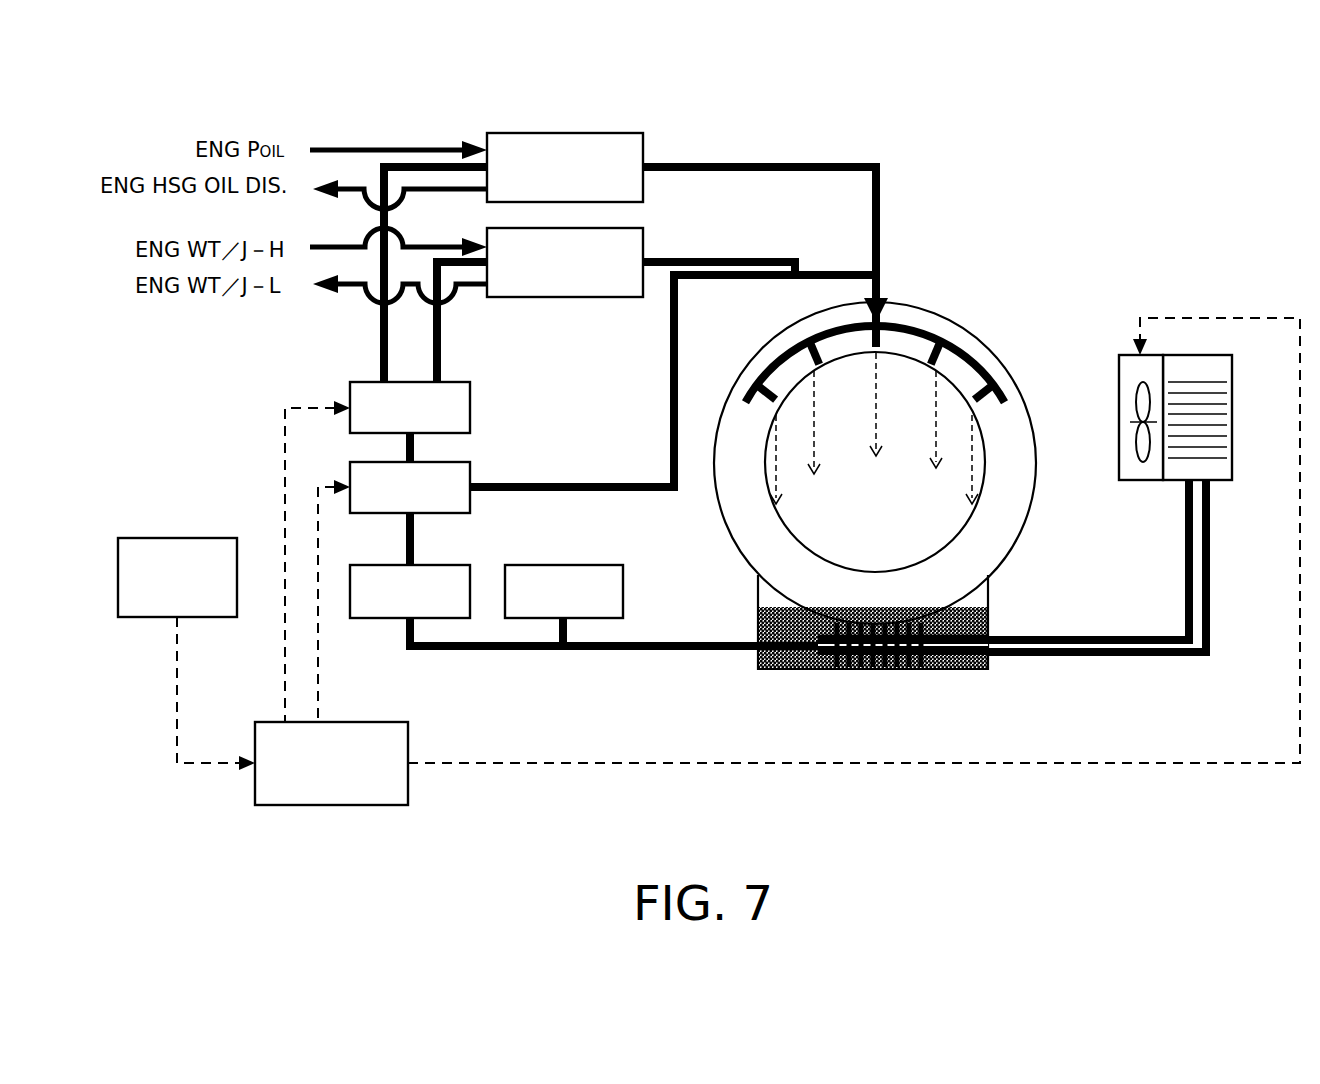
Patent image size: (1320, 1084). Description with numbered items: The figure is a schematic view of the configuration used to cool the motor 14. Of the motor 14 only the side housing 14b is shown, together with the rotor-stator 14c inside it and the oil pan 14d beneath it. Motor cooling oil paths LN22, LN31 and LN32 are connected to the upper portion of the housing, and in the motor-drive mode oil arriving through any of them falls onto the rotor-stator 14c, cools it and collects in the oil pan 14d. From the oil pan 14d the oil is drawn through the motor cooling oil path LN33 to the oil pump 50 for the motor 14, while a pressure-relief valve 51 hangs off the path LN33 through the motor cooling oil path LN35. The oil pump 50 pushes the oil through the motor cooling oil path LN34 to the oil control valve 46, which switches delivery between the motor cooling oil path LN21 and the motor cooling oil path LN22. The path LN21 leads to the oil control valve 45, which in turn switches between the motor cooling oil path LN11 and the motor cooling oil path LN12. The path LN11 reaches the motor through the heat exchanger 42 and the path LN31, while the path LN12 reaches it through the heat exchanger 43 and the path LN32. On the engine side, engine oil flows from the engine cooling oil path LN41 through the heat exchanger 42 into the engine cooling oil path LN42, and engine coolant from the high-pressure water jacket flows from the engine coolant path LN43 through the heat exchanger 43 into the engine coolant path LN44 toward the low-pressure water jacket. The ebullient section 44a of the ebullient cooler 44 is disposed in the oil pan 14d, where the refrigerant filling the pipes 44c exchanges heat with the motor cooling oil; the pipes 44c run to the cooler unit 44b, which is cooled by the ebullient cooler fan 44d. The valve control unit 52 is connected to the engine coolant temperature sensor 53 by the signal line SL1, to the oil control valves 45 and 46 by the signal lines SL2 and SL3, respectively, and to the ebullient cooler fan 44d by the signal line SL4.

The motor 14 is at (899, 465).
The side housing 14b is at (930, 310).
The rotor-stator 14c is at (917, 540).
The oil pan 14d is at (778, 670).
The heat exchanger 42 is at (595, 132).
The heat exchanger 43 is at (592, 298).
The ebullient cooler 44 is at (1057, 503).
The ebullient section 44a is at (912, 676).
The radiator 44b is at (1242, 374).
The pipes 44c is at (1065, 663).
The ebullient cooler fan 44d is at (1104, 404).
The oil control valve 45 is at (470, 400).
The oil control valve 46 is at (470, 468).
The oil pump 50 is at (445, 565).
The pressure-relief valve 51 is at (572, 563).
The valve control unit 52 is at (390, 722).
The engine coolant temperature sensor 53 is at (168, 538).
The motor cooling oil path LN11 is at (380, 327).
The motor cooling oil path LN12 is at (441, 333).
The motor cooling oil path LN21 is at (407, 448).
The motor cooling oil path LN22 is at (553, 485).
The motor cooling oil path LN31 is at (775, 162).
The motor cooling oil path LN32 is at (703, 257).
The motor cooling oil path LN33 is at (617, 652).
The motor cooling oil path LN34 is at (407, 532).
The motor cooling oil path LN35 is at (570, 630).
The engine cooling oil path LN41 is at (400, 146).
The engine cooling oil path LN42 is at (347, 186).
The engine coolant path LN43 is at (443, 220).
The engine coolant path LN44 is at (347, 288).
The signal line SL1 is at (175, 738).
The signal line SL2 is at (285, 630).
The signal line SL3 is at (320, 657).
The signal line SL4 is at (520, 766).